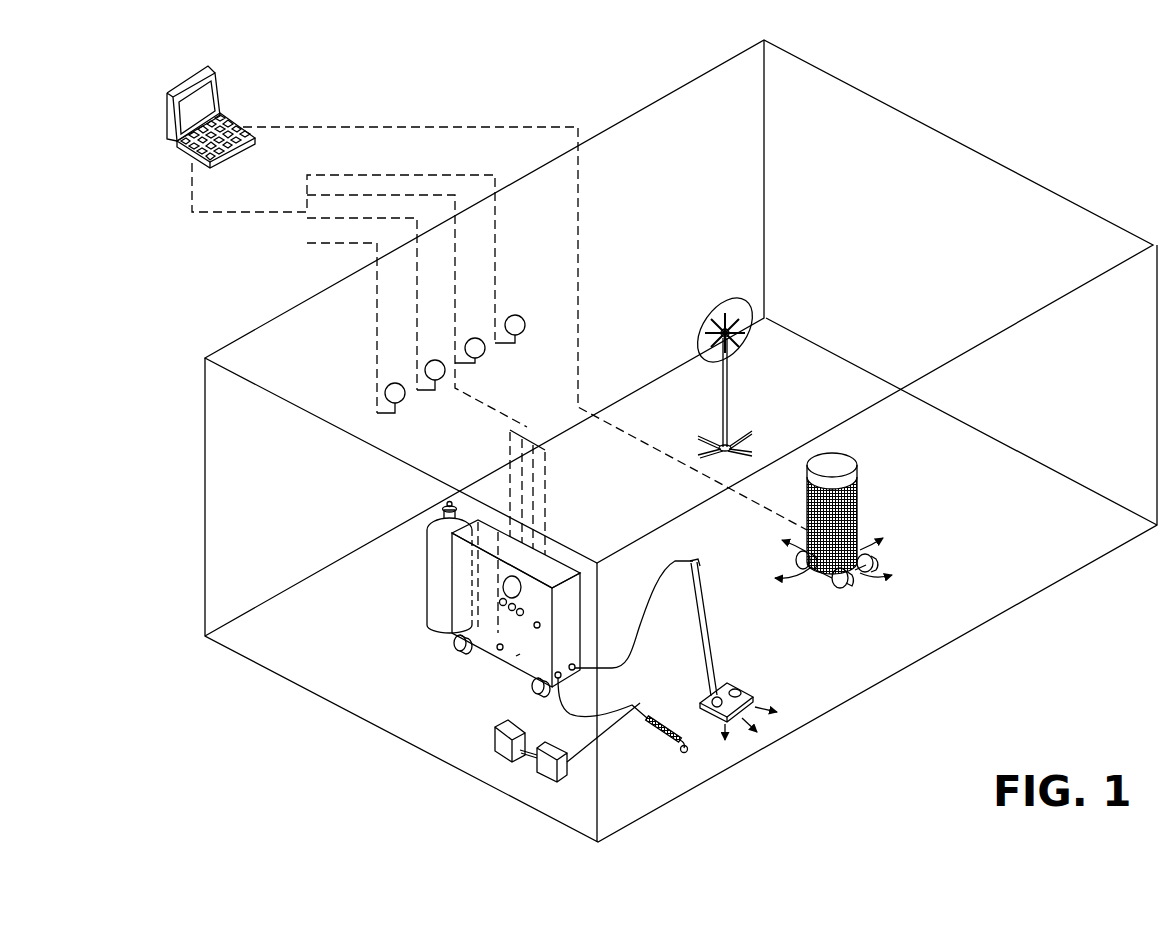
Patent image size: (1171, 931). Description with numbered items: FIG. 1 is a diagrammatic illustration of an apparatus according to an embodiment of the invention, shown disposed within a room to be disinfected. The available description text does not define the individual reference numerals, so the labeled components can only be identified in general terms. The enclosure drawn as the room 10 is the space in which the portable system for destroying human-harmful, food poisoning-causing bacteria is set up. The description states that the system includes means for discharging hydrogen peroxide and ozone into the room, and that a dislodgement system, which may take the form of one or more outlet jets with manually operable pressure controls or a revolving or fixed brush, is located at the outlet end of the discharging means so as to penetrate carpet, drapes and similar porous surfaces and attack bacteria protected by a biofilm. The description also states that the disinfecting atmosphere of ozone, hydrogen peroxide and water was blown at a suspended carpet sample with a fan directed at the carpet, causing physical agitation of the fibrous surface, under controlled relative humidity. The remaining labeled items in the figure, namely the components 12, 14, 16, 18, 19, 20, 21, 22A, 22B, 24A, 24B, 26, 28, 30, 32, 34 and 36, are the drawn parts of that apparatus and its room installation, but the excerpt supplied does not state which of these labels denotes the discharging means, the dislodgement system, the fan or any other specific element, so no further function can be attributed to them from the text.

The enclosure / room 10 is at (950, 642).
The gas cylinder 12 is at (438, 578).
The control unit 14 is at (460, 617).
The front panel 16 is at (518, 655).
The connector 18 is at (498, 649).
The sensor module 19 is at (547, 783).
The connector 20 is at (540, 624).
The sensor module 21 is at (507, 760).
The cable 22A is at (575, 717).
The cable 22B is at (632, 705).
The probe 24A is at (660, 727).
The sensor stand 24B is at (717, 665).
The computer 26 is at (232, 160).
The temperature sensor 28 is at (377, 352).
The pressure sensor 30 is at (497, 280).
The oxygen sensor 32 is at (457, 307).
The fan / humidity sensor 34 is at (417, 327).
The air purifier 36 is at (858, 508).